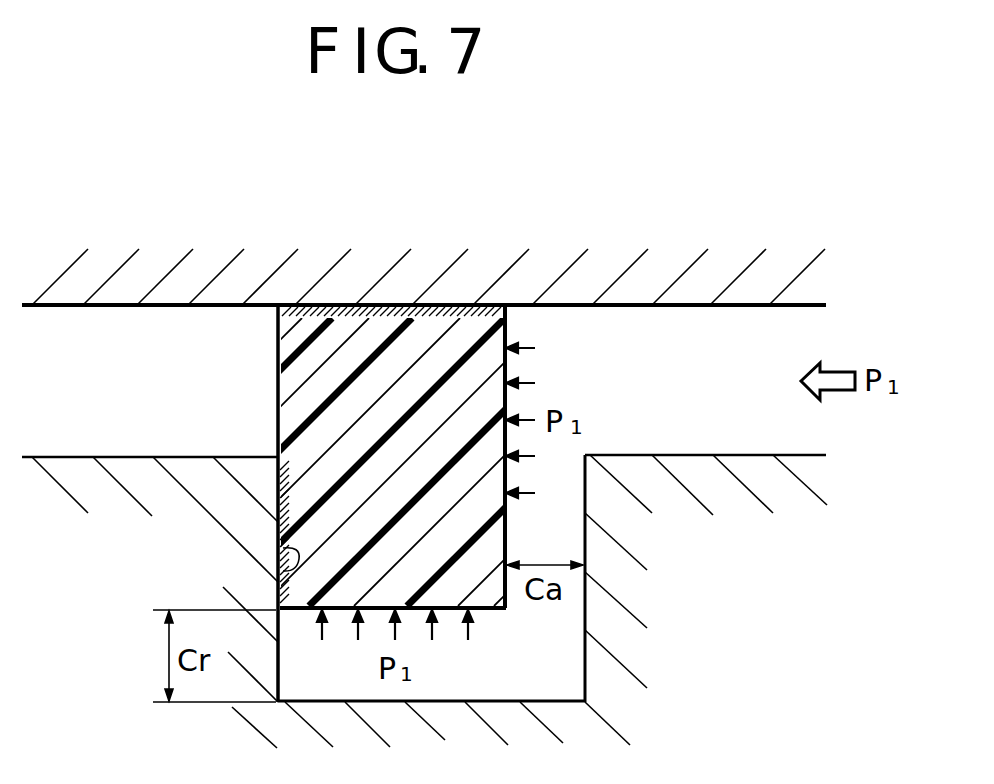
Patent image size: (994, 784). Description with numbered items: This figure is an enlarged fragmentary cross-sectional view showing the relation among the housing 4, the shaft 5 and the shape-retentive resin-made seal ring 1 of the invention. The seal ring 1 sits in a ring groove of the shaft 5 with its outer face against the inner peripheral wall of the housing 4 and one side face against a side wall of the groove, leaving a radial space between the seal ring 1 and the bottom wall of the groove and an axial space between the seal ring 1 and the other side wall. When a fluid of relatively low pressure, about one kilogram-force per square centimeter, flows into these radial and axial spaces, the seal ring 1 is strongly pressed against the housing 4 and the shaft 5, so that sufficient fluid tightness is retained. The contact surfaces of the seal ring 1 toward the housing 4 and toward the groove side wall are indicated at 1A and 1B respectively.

The seal ring 1 is at (398, 405).
The upper sliding surface of piston ring 1A is at (385, 306).
The inner peripheral surface of piston ring 1B is at (279, 572).
The housing 4 is at (637, 238).
The shaft 5 is at (726, 676).